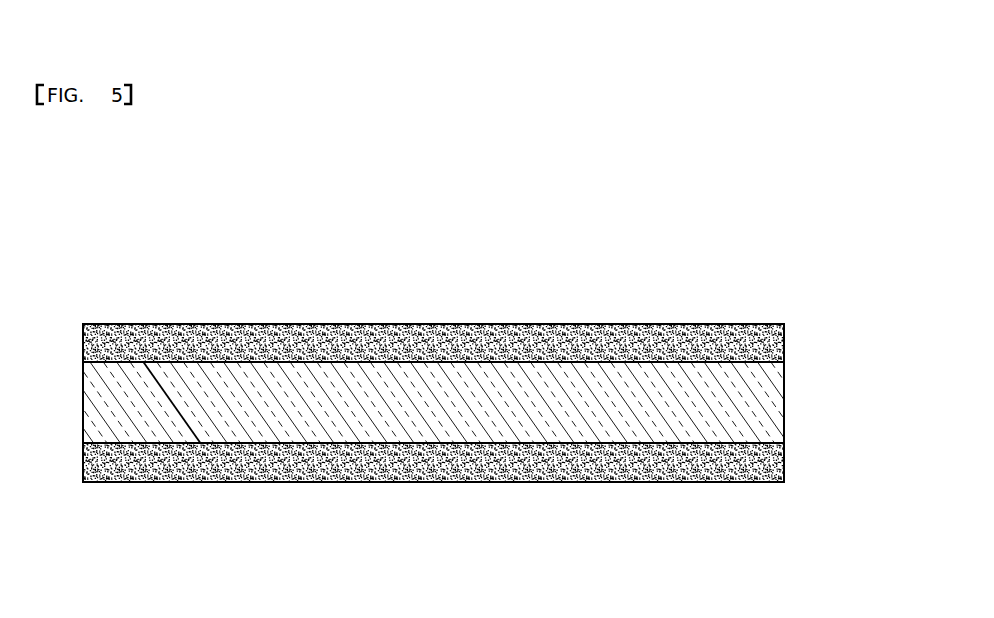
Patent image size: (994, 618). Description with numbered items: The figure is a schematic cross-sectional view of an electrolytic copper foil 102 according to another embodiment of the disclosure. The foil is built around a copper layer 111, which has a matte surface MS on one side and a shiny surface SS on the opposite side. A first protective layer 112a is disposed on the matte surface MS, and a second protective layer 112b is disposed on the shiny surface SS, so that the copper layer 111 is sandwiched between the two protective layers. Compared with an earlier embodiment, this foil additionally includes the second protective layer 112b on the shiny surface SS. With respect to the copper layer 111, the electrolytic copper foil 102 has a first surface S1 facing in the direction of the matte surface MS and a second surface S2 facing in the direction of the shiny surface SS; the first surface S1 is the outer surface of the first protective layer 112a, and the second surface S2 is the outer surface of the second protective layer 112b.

The electrolytic copper foil 102 is at (98, 235).
The copper layer 111 is at (770, 403).
The first protective layer 112a is at (769, 344).
The second protective layer 112b is at (771, 462).
The matte surface MS is at (306, 362).
The shiny surface SS is at (305, 443).
The first surface S1 is at (460, 323).
The second surface S2 is at (460, 482).